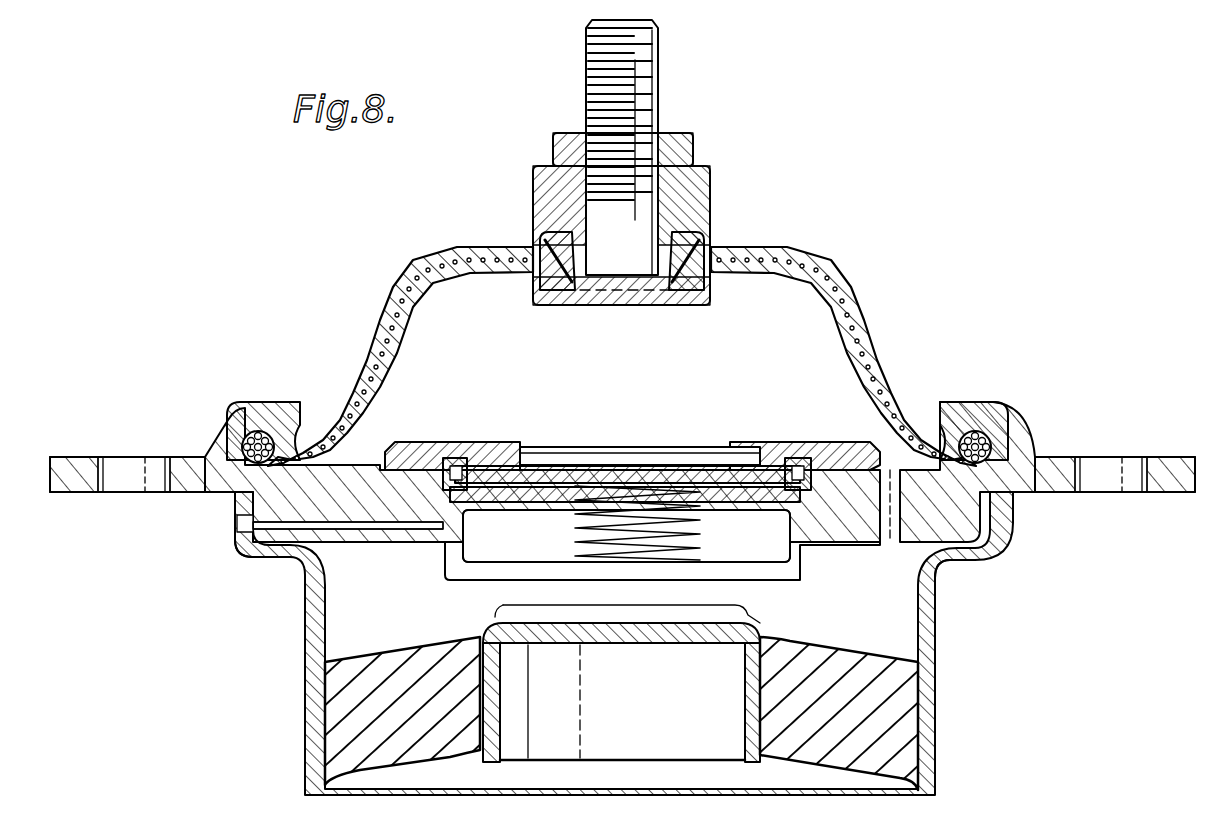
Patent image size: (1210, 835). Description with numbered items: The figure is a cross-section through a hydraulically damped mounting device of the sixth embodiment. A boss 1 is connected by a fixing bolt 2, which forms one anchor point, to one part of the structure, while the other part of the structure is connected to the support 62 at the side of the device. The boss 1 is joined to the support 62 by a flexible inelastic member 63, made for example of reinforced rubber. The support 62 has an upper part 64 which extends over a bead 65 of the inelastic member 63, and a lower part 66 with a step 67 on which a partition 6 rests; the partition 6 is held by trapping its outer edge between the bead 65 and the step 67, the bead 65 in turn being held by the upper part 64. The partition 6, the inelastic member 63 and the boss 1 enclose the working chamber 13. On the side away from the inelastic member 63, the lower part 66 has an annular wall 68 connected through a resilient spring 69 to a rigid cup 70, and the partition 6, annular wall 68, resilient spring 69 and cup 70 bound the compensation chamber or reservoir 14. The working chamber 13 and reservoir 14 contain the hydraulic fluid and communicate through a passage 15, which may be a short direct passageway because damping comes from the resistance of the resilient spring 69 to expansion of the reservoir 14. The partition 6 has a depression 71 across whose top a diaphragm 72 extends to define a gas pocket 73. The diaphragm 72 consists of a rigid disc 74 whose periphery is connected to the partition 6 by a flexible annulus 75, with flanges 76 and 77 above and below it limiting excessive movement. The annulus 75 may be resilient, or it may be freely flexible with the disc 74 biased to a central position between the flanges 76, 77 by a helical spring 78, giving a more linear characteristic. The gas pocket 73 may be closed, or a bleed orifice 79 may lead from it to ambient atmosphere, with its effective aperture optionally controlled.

The boss 1 is at (700, 200).
The fixing bolt 2 is at (660, 100).
The partition 6 is at (985, 525).
The working chamber 13 is at (494, 303).
The compensation chamber or reservoir 14 is at (360, 625).
The passage 15 is at (960, 562).
The support 62 is at (78, 455).
The flexible inelastic member 63 is at (860, 312).
The upper part of support 64 is at (232, 400).
The bead 65 is at (265, 440).
The lower part of support 66 is at (235, 492).
The step 67 is at (245, 557).
The annular wall 68 is at (318, 692).
The resilient spring 69 is at (350, 732).
The rigid cup 70 is at (747, 693).
The depression 71 is at (487, 575).
The diaphragm 72 is at (600, 440).
The gas pocket 73 is at (537, 550).
The rigid disc 74 is at (668, 463).
The flexible annulus 75 is at (482, 455).
The flange 76 is at (745, 460).
The flange 77 is at (780, 470).
The helical spring 78 is at (660, 541).
The bleed orifice 79 is at (300, 530).